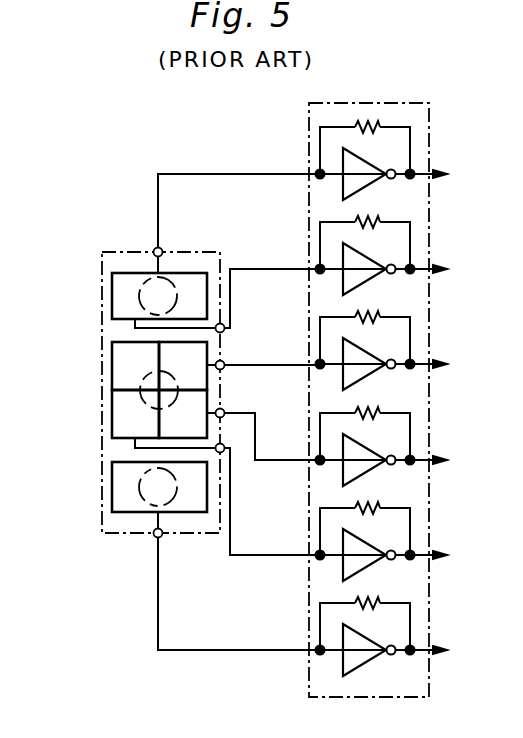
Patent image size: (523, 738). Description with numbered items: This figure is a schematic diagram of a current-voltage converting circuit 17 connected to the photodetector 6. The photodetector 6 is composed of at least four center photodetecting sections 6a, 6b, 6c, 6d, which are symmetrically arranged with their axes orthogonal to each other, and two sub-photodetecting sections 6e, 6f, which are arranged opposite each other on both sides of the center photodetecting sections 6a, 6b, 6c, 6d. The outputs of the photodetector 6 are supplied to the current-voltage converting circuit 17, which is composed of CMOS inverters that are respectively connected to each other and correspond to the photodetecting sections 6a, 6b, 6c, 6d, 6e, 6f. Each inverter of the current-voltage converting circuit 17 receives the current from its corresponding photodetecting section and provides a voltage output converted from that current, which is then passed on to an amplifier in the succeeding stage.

The photodetector 6 is at (117, 249).
The center photodetecting section 6a is at (112, 368).
The center photodetecting section 6b is at (197, 349).
The center photodetecting section 6c is at (197, 403).
The center photodetecting section 6d is at (112, 422).
The sub-photodetecting section 6e is at (112, 293).
The sub-photodetecting section 6f is at (112, 488).
The current-voltage converting circuit 17 is at (429, 130).